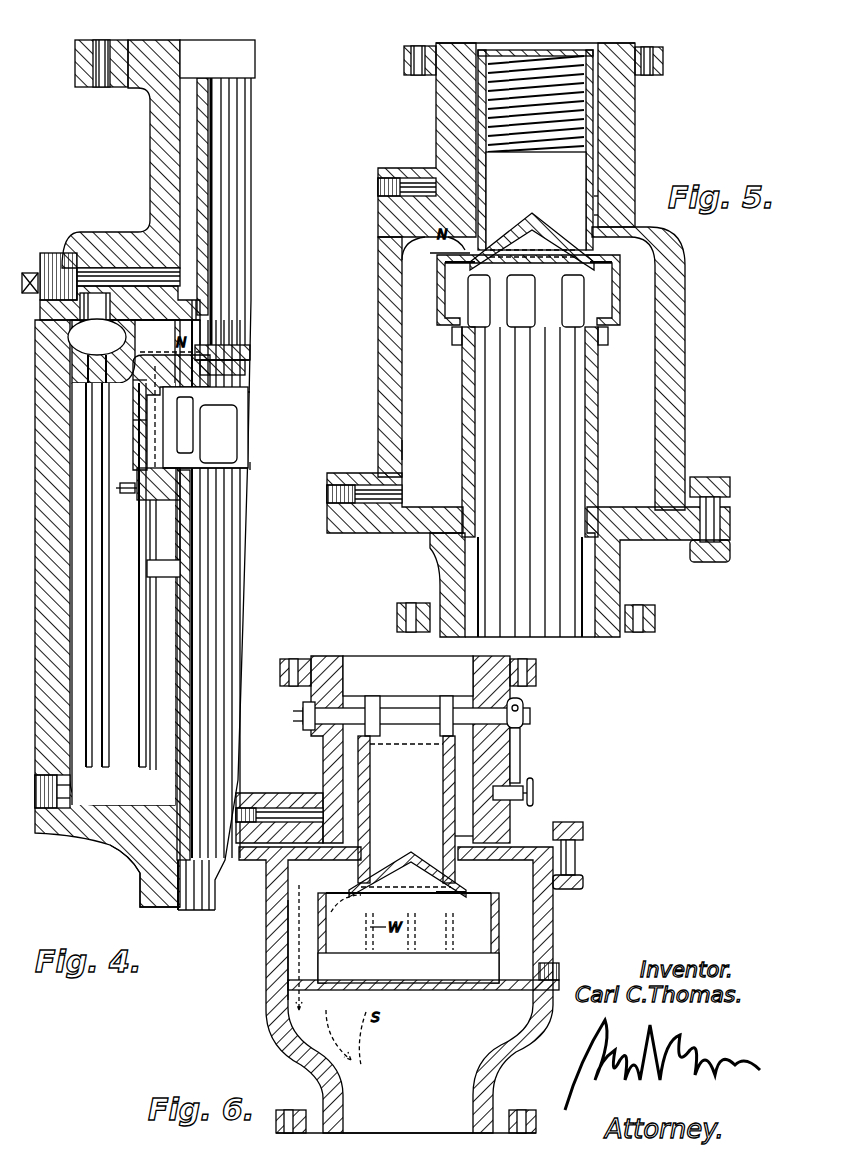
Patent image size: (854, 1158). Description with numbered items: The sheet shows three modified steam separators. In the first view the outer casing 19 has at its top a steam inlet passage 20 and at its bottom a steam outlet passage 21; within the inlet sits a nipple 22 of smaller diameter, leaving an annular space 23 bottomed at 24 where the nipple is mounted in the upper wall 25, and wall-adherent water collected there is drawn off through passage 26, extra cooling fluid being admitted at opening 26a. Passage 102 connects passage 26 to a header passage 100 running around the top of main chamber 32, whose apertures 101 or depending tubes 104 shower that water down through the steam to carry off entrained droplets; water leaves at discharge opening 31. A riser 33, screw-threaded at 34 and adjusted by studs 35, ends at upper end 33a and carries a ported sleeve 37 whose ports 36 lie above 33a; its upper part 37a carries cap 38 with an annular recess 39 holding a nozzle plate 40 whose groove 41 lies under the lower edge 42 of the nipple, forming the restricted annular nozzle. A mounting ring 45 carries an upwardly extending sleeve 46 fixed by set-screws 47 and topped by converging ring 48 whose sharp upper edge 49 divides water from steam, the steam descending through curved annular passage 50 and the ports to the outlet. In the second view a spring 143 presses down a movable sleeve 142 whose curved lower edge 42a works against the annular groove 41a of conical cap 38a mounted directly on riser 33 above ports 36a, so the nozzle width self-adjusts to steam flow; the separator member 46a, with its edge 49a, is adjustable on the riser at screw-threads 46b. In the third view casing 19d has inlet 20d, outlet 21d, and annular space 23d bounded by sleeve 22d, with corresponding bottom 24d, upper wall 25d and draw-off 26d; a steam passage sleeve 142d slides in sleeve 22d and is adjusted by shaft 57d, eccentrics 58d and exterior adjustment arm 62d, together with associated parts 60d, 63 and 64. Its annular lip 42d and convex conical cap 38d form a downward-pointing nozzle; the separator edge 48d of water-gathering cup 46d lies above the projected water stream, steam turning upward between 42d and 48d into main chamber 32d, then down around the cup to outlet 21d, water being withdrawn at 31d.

In FIG. 4, the outer casing 19 is at (39, 572).
In FIG. 5, the outer casing 19 is at (686, 358).
In FIG. 4, the steam inlet passage 20 is at (234, 50).
In FIG. 5, the steam inlet passage 20 is at (567, 45).
In FIG. 4, the steam outlet passage 21 is at (195, 905).
In FIG. 5, the steam outlet passage 21 is at (577, 630).
In FIG. 4, the nipple 22 is at (197, 115).
In FIG. 4, the annular space 23 is at (188, 150).
In FIG. 5, the annular space 23 is at (606, 156).
In FIG. 4, the bottom of annular space 24 is at (210, 282).
In FIG. 5, the bottom of annular space 24 is at (600, 192).
In FIG. 4, the upper wall of casing 25 is at (212, 305).
In FIG. 5, the upper wall of casing 25 is at (598, 215).
In FIG. 4, the draw-off passage 26 is at (112, 275).
In FIG. 5, the draw-off passage 26 is at (420, 178).
In FIG. 4, the opening 26a is at (50, 255).
In FIG. 4, the discharge opening 31 is at (75, 806).
In FIG. 5, the discharge opening 31 is at (398, 504).
In FIG. 4, the main chamber 32 is at (123, 594).
In FIG. 5, the main chamber 32 is at (420, 447).
In FIG. 4, the riser 33 is at (196, 652).
In FIG. 5, the riser 33 is at (595, 416).
In FIG. 4, the upper end of riser 33a is at (249, 466).
In FIG. 4, the screw threads 34 is at (172, 850).
In FIG. 5, the screw threads 34 is at (605, 516).
In FIG. 4, the studs 35 is at (182, 592).
In FIG. 4, the ports 36 is at (216, 448).
In FIG. 5, the ports 36a is at (575, 310).
In FIG. 4, the ported sleeve 37 is at (182, 536).
In FIG. 4, the upper end of sleeve 37a is at (218, 434).
In FIG. 4, the cap 38 is at (240, 366).
In FIG. 5, the cap 38a is at (525, 240).
In FIG. 4, the annular recess 39 is at (225, 375).
In FIG. 4, the annular nozzle plate 40 is at (230, 390).
In FIG. 4, the annular groove 41 is at (222, 353).
In FIG. 5, the annular groove 41a is at (445, 270).
In FIG. 4, the lower edge of nipple 42 is at (215, 336).
In FIG. 5, the lower edge of sleeve 42a is at (590, 258).
In FIG. 4, the mounting ring 45 is at (185, 506).
In FIG. 4, the upwardly extending sleeve 46 is at (208, 456).
In FIG. 5, the annular separator member 46a is at (620, 303).
In FIG. 5, the screw threads 46b is at (598, 350).
In FIG. 4, the set-screws 47 is at (182, 530).
In FIG. 4, the annular divider member 48 is at (150, 378).
In FIG. 4, the upper edge of ring 49 is at (170, 403).
In FIG. 5, the guide passage 49a is at (430, 253).
In FIG. 4, the curved annular passage 50 is at (136, 418).
In FIG. 4, the header passage 100 is at (86, 337).
In FIG. 4, the spaced apertures 101 is at (94, 360).
In FIG. 4, the passage 102 is at (100, 310).
In FIG. 4, the depending tubes 104 is at (148, 660).
In FIG. 5, the sleeve 142 is at (583, 183).
In FIG. 5, the spring 143 is at (580, 113).
In FIG. 6, the casing 19d is at (268, 956).
In FIG. 6, the upper inlet 20d is at (472, 674).
In FIG. 6, the lower outlet 21d is at (408, 1126).
In FIG. 6, the sleeve 22d is at (368, 790).
In FIG. 6, the annular space 23d is at (348, 766).
In FIG. 6, the valve block 24d is at (500, 800).
In FIG. 6, the shoulder 25d is at (466, 840).
In FIG. 6, the flange bolt 26d is at (263, 800).
In FIG. 6, the water withdrawal opening 31d is at (508, 992).
In FIG. 6, the main chamber 32d is at (291, 976).
In FIG. 6, the cap 38d is at (422, 870).
In FIG. 6, the annular lip 42d is at (472, 888).
In FIG. 6, the water gathering cup 46d is at (573, 944).
In FIG. 6, the annular separator edge 48d is at (500, 895).
In FIG. 6, the shaft 57d is at (532, 722).
In FIG. 6, the eccentrics 58d is at (380, 712).
In FIG. 6, the shaft nut 60d is at (308, 722).
In FIG. 6, the exterior adjustment arm 62d is at (527, 765).
In FIG. 6, the valve stem 63 is at (540, 797).
In FIG. 6, the stem head 64 is at (541, 805).
In FIG. 6, the steam passage sleeve 142d is at (382, 820).